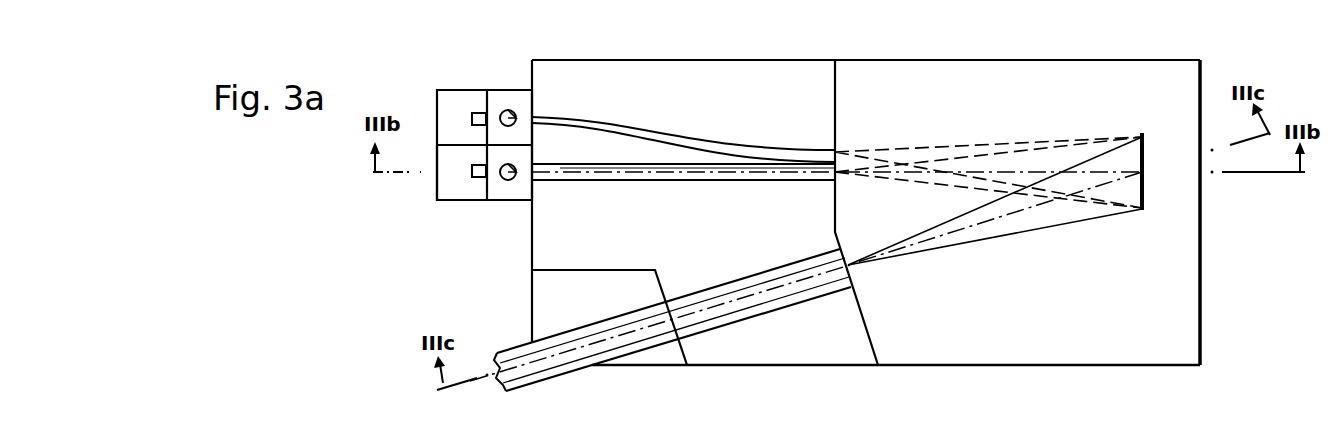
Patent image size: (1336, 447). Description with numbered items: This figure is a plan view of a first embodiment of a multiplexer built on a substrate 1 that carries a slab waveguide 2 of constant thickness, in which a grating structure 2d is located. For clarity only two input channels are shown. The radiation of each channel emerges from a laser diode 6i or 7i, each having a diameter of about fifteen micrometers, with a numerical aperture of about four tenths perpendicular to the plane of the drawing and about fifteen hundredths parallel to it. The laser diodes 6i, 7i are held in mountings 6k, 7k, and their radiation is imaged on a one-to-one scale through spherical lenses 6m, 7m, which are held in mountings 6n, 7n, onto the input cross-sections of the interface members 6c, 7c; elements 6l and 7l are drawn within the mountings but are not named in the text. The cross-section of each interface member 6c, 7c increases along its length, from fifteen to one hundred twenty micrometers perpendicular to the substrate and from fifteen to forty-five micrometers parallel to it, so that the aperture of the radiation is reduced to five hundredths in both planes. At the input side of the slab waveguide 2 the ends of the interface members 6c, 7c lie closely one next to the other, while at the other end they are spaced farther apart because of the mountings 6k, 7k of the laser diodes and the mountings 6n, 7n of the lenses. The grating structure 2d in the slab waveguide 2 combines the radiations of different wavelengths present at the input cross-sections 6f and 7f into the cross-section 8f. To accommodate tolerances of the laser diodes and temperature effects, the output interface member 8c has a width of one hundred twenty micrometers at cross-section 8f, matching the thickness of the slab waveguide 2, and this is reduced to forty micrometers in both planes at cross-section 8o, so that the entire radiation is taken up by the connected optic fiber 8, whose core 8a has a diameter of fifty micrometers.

The substrate 1 is at (752, 82).
The slab waveguide 2 is at (980, 73).
The grating structure 2d is at (1145, 197).
The interface member 6c is at (683, 127).
The input cross-section 6f is at (838, 151).
The laser diode 6i is at (533, 117).
The mounting 6k is at (448, 115).
The connector element 6l is at (480, 113).
The spherical lens 6m is at (506, 113).
The mounting 6n is at (517, 90).
The interface member 7c is at (647, 181).
The input cross-section 7f is at (839, 181).
The laser diode 7i is at (534, 181).
The mounting 7k is at (452, 183).
The connector element 7l is at (470, 178).
The spherical lens 7m is at (505, 178).
The mounting 7n is at (517, 190).
The optic fiber 8 is at (596, 381).
The core 8a is at (560, 353).
The interface member 8c is at (770, 300).
The cross-section 8f is at (849, 266).
The cross-section 8o is at (692, 331).